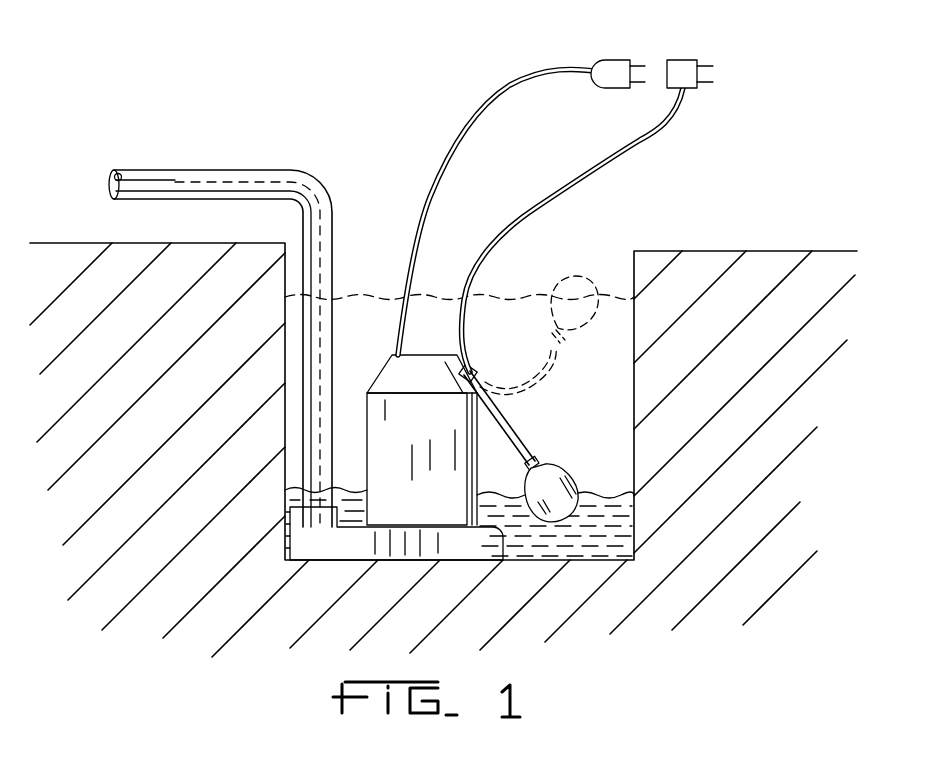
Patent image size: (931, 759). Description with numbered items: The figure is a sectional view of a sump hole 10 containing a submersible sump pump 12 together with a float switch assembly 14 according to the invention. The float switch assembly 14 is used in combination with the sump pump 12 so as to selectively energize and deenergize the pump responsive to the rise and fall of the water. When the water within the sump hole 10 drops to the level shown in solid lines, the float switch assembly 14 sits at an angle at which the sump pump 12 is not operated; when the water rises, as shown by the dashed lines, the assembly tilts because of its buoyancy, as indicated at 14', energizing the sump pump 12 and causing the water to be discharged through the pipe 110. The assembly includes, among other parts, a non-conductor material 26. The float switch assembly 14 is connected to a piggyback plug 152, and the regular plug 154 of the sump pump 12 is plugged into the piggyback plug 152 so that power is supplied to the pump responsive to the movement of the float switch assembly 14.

The sump hole 10 is at (442, 361).
The submersible sump pump 12 is at (366, 460).
The float switch assembly 14 is at (606, 471).
The float switch assembly in tilted position 14' is at (634, 316).
The non-conductor material 26 is at (513, 430).
The pipe 110 is at (203, 180).
The piggyback plug 152 is at (683, 60).
The regular plug 154 is at (613, 60).